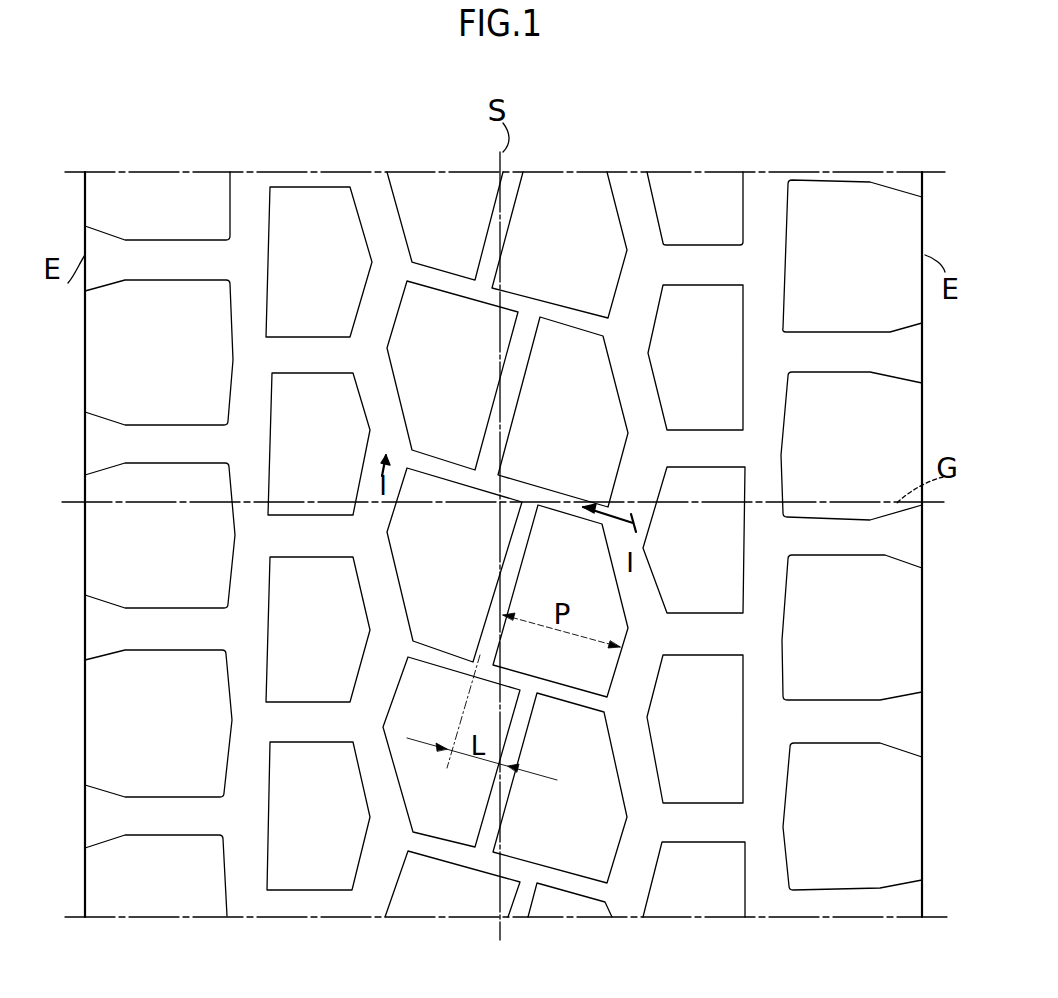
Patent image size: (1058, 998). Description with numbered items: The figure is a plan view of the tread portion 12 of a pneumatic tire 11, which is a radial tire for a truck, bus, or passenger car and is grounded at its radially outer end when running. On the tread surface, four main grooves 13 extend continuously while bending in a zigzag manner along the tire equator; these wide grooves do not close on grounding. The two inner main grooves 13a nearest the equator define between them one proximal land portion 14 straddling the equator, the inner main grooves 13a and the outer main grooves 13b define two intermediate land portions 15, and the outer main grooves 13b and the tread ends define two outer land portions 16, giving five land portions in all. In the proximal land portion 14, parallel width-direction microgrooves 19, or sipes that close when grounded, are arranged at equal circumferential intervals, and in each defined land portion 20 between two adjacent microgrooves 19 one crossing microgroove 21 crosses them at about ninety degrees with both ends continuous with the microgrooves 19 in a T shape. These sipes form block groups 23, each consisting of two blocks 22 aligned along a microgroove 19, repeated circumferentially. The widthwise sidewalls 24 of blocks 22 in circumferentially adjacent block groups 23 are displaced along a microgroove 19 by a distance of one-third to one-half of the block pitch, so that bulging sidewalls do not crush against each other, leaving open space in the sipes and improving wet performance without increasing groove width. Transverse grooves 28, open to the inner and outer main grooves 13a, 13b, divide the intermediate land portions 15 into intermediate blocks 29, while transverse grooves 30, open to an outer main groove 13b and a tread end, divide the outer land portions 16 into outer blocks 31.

The pneumatic tire 11 is at (690, 152).
The tread portion 12 is at (450, 168).
The main groove 13 is at (242, 880).
The inner main groove 13a is at (385, 195).
The outer main groove 13b is at (245, 200).
The proximal land portion 14 is at (513, 927).
The intermediate land portion 15 is at (297, 917).
The outer land portion 16 is at (118, 917).
The microgroove 19 is at (457, 473).
The defined land portion 20 is at (648, 577).
The crossing microgroove 21 is at (495, 437).
The block 22 is at (445, 315).
The block group 23 is at (388, 292).
The widthwise sidewall 24 is at (513, 617).
The transverse groove 28 is at (705, 450).
The intermediate block 29 is at (720, 322).
The transverse groove 30 is at (165, 432).
The outer block 31 is at (855, 210).